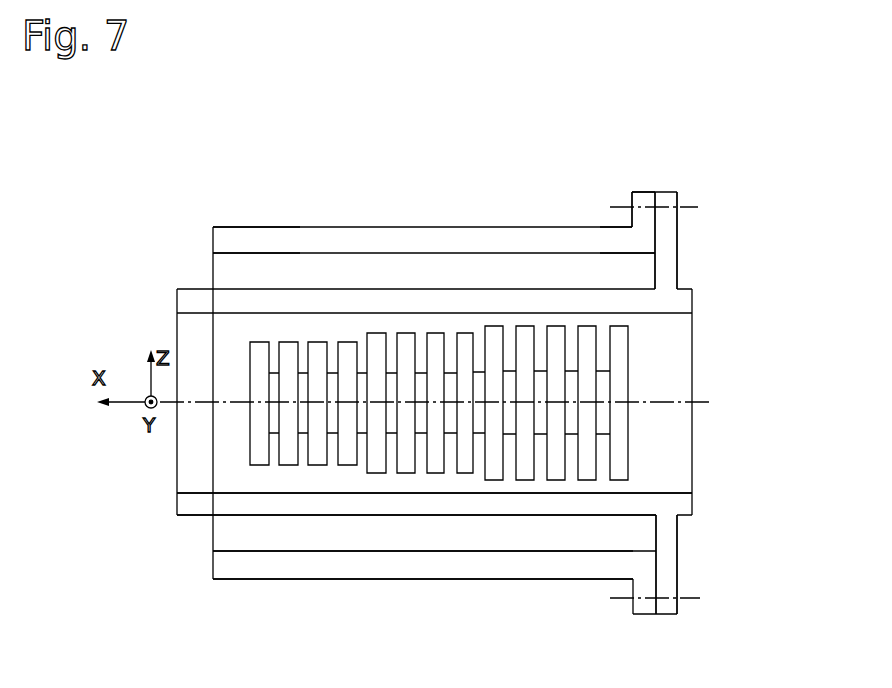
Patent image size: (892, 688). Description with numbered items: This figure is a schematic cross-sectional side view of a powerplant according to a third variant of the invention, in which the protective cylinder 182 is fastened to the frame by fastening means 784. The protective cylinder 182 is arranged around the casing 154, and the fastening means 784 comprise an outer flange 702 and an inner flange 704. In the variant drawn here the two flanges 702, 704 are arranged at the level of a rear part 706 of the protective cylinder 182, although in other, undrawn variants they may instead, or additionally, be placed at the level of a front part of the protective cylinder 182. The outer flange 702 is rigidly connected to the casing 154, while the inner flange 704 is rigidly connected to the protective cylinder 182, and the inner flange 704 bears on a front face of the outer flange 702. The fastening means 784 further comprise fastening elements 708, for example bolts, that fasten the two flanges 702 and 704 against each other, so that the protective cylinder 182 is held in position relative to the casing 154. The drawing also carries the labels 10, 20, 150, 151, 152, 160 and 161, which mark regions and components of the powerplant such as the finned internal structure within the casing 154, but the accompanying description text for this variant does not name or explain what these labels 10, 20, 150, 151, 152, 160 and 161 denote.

The first fluid 10 is at (672, 450).
The second fluid 20 is at (437, 621).
The heat exchanger 150 is at (720, 601).
The first pipe section 151 is at (112, 222).
The second pipe section 152 is at (770, 547).
The casing 154 is at (665, 503).
The housing 160 is at (142, 488).
The fins 161 is at (620, 354).
The protective cylinder 182 is at (334, 244).
The outer flange 702 is at (667, 246).
The inner flange 704 is at (642, 198).
The rear part 706 is at (640, 237).
The fastening elements 708 is at (686, 208).
The fastening means 784 is at (733, 173).